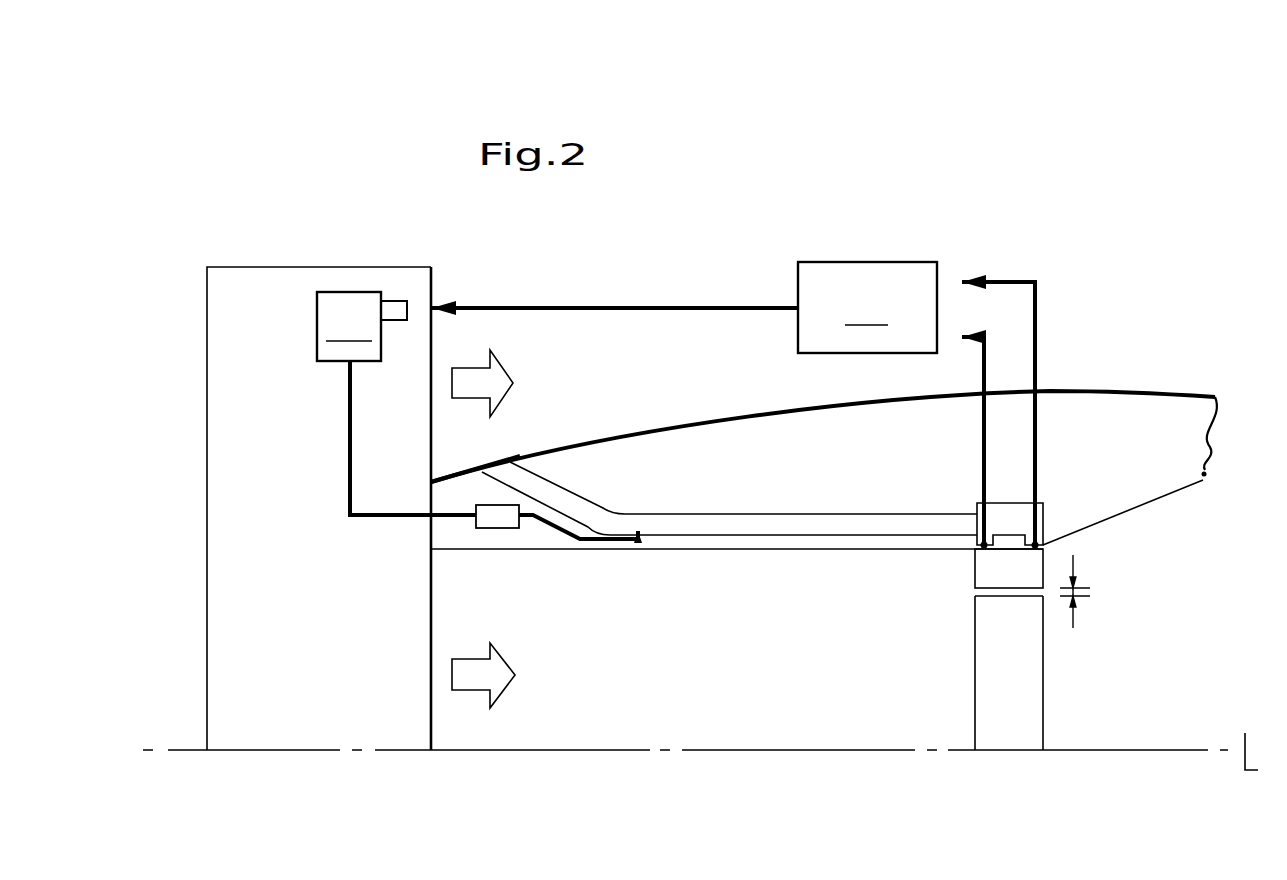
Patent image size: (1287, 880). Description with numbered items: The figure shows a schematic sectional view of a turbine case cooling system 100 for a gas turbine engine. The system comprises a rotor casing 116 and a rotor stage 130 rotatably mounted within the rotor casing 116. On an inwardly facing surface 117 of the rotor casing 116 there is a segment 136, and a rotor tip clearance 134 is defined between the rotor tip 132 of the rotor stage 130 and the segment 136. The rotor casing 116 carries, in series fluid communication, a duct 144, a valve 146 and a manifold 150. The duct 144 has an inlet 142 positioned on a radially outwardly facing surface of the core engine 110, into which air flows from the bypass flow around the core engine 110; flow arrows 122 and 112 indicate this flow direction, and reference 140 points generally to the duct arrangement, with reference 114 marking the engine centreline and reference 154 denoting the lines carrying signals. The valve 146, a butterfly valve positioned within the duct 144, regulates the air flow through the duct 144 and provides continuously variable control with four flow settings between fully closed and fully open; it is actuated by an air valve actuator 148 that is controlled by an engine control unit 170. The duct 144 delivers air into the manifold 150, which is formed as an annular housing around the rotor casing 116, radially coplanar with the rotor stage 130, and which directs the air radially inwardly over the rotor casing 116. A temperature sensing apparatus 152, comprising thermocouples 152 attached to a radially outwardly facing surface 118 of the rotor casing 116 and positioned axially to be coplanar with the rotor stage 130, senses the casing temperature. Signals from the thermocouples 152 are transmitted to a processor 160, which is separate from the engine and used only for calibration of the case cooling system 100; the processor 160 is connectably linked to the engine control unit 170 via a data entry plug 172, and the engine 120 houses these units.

The turbine case cooling system 100 is at (1072, 262).
The core engine 110 is at (1117, 390).
The flow direction arrow (lower) 112 is at (477, 677).
The baseline / symmetry reference 114 is at (407, 752).
The rotor casing 116 is at (740, 552).
The inwardly facing surface 117 is at (1003, 549).
The radially outwardly facing surface 118 is at (1010, 537).
The pressure bulkhead / cabin wall 120 is at (298, 259).
The flow direction arrow (upper) 122 is at (468, 376).
The rotor stage 130 is at (1022, 732).
The rotor tip 132 is at (973, 597).
The rotor tip clearance 134 is at (1075, 563).
The segment 136 is at (976, 556).
The panel arrangement 140 is at (723, 509).
The inlet 142 is at (497, 466).
The duct 144 is at (558, 500).
The valve 146 is at (660, 535).
The air valve actuator 148 is at (505, 519).
The manifold 150 is at (1043, 512).
The temperature sensing apparatus 152 is at (980, 556).
The signal lines 154 is at (1033, 320).
The processor 160 is at (684, 307).
The engine control unit 170 is at (396, 403).
The data entry plug 172 is at (394, 306).